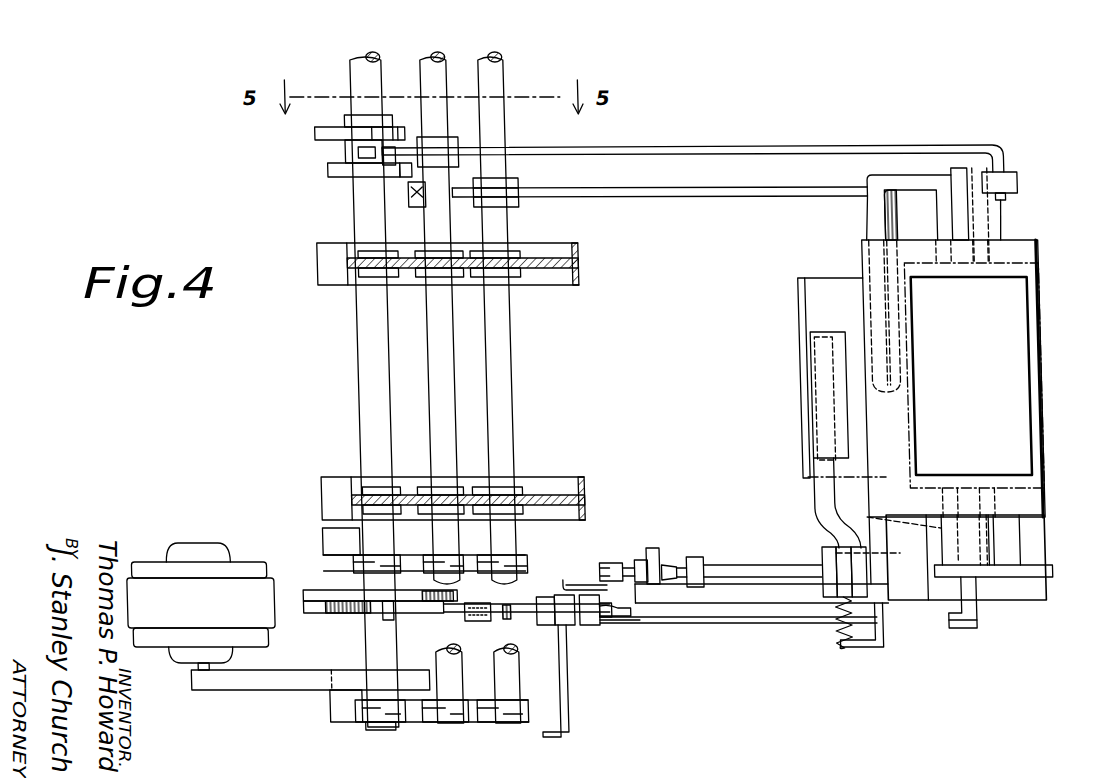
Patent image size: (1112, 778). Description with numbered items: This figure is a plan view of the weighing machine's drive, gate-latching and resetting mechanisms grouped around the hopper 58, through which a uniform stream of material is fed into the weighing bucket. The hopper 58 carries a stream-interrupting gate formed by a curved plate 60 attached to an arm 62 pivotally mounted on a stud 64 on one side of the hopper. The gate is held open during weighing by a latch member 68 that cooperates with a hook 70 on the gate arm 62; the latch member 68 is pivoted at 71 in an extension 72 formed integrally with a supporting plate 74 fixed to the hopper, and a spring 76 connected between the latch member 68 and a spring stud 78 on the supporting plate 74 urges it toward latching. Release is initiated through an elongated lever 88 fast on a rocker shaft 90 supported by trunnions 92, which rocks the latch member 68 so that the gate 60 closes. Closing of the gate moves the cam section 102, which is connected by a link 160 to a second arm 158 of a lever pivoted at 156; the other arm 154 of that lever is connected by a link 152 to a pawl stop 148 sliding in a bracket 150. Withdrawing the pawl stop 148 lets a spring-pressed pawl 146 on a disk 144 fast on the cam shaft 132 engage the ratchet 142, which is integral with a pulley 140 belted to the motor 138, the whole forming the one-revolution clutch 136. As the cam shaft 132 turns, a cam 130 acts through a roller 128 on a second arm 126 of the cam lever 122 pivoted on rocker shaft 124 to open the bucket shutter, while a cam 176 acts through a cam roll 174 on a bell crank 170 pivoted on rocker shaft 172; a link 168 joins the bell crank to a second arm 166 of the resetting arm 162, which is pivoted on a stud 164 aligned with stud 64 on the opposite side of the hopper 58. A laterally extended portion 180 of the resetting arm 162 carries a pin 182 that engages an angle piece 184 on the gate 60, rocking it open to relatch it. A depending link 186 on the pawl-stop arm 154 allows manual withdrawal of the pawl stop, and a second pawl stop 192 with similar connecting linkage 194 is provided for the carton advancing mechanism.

The hopper 58 is at (1043, 376).
The stream-interrupting gate 60 is at (838, 280).
The gate arm 62 is at (812, 502).
The stud 64 is at (975, 543).
The latch member 68 is at (843, 560).
The hook 70 is at (884, 558).
The pivot 71 is at (817, 566).
The extension 72 is at (835, 562).
The supporting plate 74 is at (774, 604).
The spring 76 is at (834, 636).
The spring stud 78 is at (877, 645).
The elongated lever 88 is at (692, 557).
The rocker shaft 90 is at (743, 561).
The trunnions 92 is at (665, 563).
The cam section 102 is at (1004, 578).
The cam lever 122 is at (694, 188).
The rocker shaft 124 is at (505, 366).
The second arm 126 is at (484, 208).
The roller 128 is at (414, 177).
The cam 130 is at (334, 170).
The cam shaft 132 is at (365, 413).
The one-revolution clutch 136 is at (301, 578).
The motor 138 is at (147, 570).
The pulley 140 is at (338, 690).
The ratchet 142 is at (331, 616).
The disk 144 is at (298, 598).
The pawl 146 is at (389, 618).
The pawl stop 148 is at (454, 615).
The bracket 150 is at (466, 599).
The link 152 is at (512, 620).
The lever arm 154 is at (547, 626).
The pivot 156 is at (598, 614).
The second arm 158 is at (592, 622).
The link 160 is at (706, 624).
The resetting arm 162 is at (912, 178).
The stud 164 is at (1008, 214).
The second arm 166 is at (1024, 182).
The link 168 is at (653, 145).
The bell crank 170 is at (353, 156).
The rocker shaft 172 is at (446, 343).
The cam roll 174 is at (391, 128).
The cam 176 is at (322, 134).
The laterally extended portion 180 is at (872, 217).
The pin 182 is at (884, 378).
The angle piece 184 is at (848, 420).
The depending link 186 is at (560, 712).
The second pawl stop 192 is at (554, 594).
The connecting linkage 194 is at (530, 570).